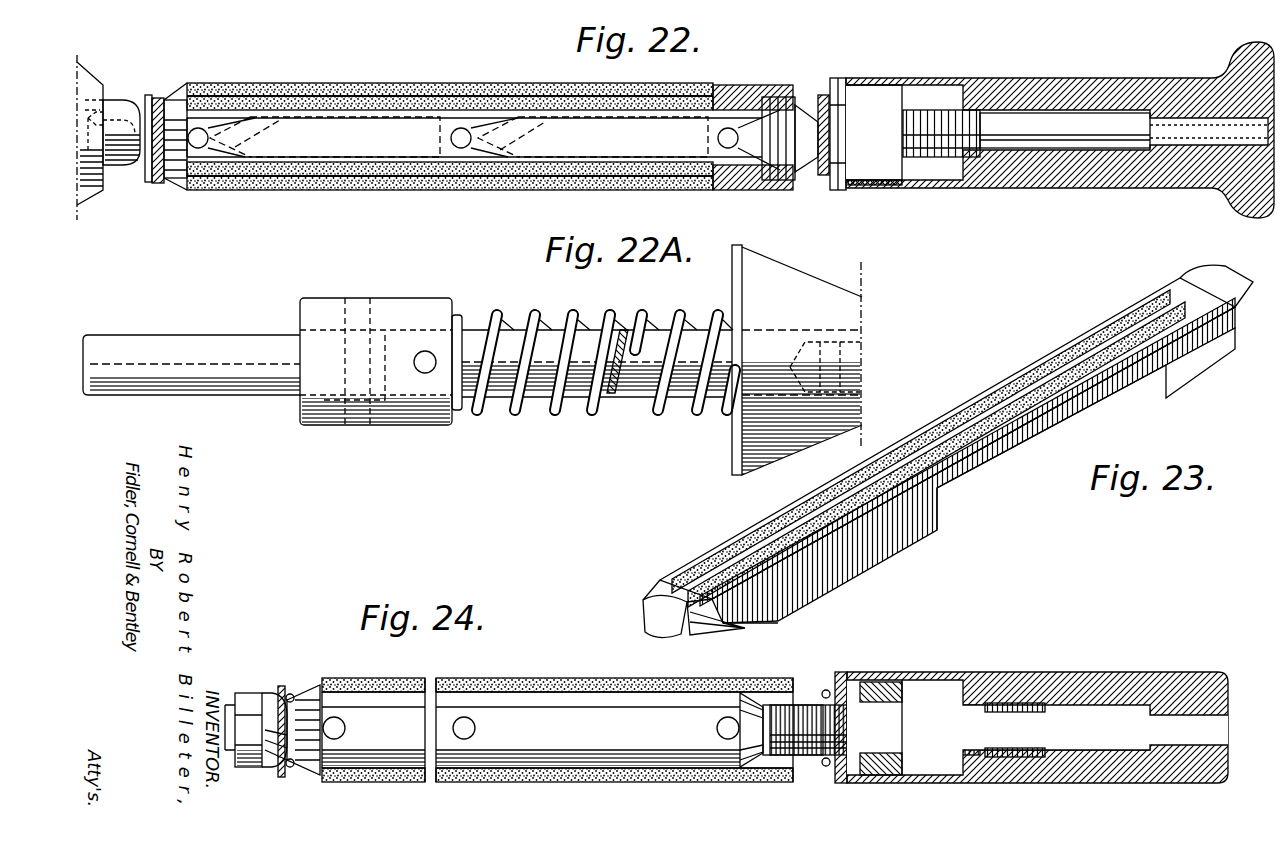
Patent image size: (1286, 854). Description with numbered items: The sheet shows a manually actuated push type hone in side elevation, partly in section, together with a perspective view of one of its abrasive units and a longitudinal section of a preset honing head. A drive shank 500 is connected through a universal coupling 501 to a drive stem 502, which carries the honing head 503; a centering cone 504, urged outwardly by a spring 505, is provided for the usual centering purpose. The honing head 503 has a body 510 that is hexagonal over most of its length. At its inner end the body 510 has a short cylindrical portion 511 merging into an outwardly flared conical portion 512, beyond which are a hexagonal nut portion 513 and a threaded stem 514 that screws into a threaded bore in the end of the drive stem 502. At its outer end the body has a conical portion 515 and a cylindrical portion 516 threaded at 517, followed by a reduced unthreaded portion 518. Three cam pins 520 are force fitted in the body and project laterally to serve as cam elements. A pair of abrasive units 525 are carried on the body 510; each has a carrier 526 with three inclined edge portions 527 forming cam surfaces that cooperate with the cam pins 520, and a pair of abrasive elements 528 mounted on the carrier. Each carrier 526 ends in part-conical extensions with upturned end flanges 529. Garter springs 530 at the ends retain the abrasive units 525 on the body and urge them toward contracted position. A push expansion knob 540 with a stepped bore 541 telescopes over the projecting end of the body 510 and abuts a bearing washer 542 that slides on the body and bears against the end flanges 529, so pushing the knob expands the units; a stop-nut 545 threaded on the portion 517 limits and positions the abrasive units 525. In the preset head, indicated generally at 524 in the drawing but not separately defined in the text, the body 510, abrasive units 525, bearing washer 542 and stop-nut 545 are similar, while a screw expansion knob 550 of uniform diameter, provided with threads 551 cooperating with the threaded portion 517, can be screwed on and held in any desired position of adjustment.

In FIG. 22A, the drive shank 500 is at (270, 378).
In FIG. 22A, the universal coupling 501 is at (432, 410).
In FIG. 22A, the drive stem 502 is at (540, 400).
In FIG. 22, the honing head 503 is at (488, 203).
In FIG. 22A, the centering cone 504 is at (735, 442).
In FIG. 22A, the spring 505 is at (618, 398).
In FIG. 22, the body 510 is at (202, 150).
In FIG. 24, the body 510 is at (404, 744).
In FIG. 22, the short cylindrical portion 511 is at (172, 150).
In FIG. 22, the outwardly flared conical portion 512 is at (120, 168).
In FIG. 24, the outwardly flared conical portion 512 is at (272, 695).
In FIG. 22, the hexagonal nut portion 513 is at (96, 160).
In FIG. 24, the hexagonal nut portion 513 is at (258, 766).
In FIG. 22, the threaded stem 514 is at (95, 120).
In FIG. 22A, the threaded stem 514 is at (855, 365).
In FIG. 22, the conical portion 515 is at (738, 98).
In FIG. 24, the conical portion 515 is at (745, 700).
In FIG. 22, the cylindrical portion 516 is at (776, 112).
In FIG. 24, the cylindrical portion 516 is at (783, 712).
In FIG. 22, the threaded portion 517 is at (940, 122).
In FIG. 24, the threaded portion 517 is at (935, 718).
In FIG. 22, the reduced unthreaded portion 518 is at (1017, 130).
In FIG. 22, the cam pins 520 is at (202, 132).
In FIG. 24, the cam pins 520 is at (338, 739).
In FIG. 24, the tube assembly 524 is at (521, 729).
In FIG. 23, the abrasive units 525 is at (950, 540).
In FIG. 24, the abrasive units 525 is at (596, 771).
In FIG. 23, the carrier 526 is at (1110, 412).
In FIG. 22, the inclined edge portions 527 is at (459, 137).
In FIG. 23, the inclined edge portions 527 is at (1212, 366).
In FIG. 23, the abrasive elements 528 is at (1003, 380).
In FIG. 24, the abrasive elements 528 is at (570, 679).
In FIG. 22, the upturned end flange 529 is at (842, 98).
In FIG. 23, the upturned end flange 529 is at (1236, 270).
In FIG. 24, the upturned end flange 529 is at (283, 686).
In FIG. 22, the garter spring 530 is at (160, 100).
In FIG. 24, the garter spring 530 is at (292, 693).
In FIG. 22, the push expansion knob 540 is at (1062, 196).
In FIG. 22, the bore 541 is at (1202, 148).
In FIG. 22, the bearing washer 542 is at (852, 185).
In FIG. 24, the bearing washer 542 is at (841, 784).
In FIG. 22, the stop-nut 545 is at (884, 182).
In FIG. 24, the stop-nut 545 is at (880, 776).
In FIG. 24, the screw expansion knob 550 is at (1122, 683).
In FIG. 24, the threads 551 is at (1022, 703).